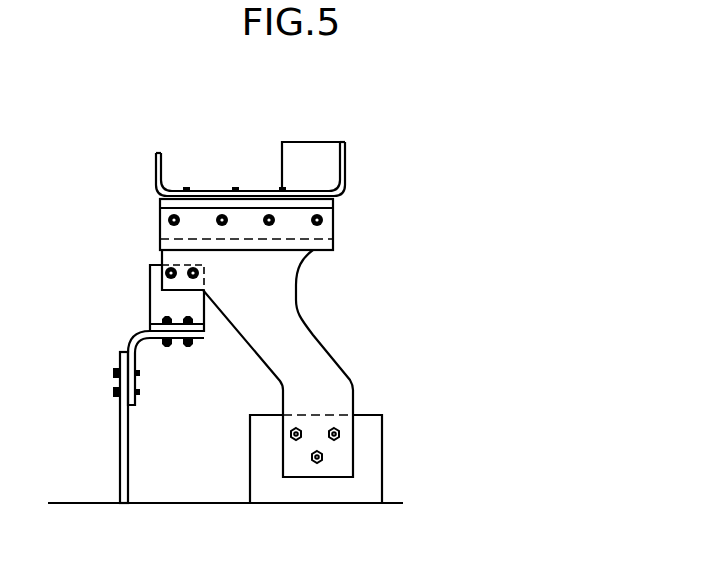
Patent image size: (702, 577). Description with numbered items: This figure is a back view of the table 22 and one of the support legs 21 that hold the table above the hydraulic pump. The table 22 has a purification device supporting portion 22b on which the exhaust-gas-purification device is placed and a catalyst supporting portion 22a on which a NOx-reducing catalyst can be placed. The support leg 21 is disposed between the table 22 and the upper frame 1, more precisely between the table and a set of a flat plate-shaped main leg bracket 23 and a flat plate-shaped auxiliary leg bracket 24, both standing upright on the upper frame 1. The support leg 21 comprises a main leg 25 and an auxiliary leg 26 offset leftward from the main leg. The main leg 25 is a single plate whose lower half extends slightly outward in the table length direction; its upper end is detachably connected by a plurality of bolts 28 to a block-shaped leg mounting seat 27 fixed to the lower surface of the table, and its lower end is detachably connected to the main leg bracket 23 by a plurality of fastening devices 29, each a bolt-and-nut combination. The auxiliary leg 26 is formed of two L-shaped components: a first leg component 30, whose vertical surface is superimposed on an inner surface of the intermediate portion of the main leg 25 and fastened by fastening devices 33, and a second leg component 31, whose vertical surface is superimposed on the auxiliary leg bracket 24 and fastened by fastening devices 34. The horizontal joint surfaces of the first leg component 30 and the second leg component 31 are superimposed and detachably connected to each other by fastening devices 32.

The upper frame 1 is at (158, 503).
The support leg 21 is at (163, 430).
The table 22 is at (348, 164).
The catalyst supporting portion 22a is at (312, 142).
The purification device supporting portion 22b is at (212, 191).
The main leg bracket 23 is at (383, 462).
The auxiliary leg bracket 24 is at (120, 452).
The main leg 25 is at (238, 365).
The auxiliary leg 26 is at (152, 347).
The leg mounting seat 27 is at (308, 241).
The bolts 28 is at (223, 226).
The fastening devices 29 is at (296, 440).
The first leg component 30 is at (150, 276).
The second leg component 31 is at (128, 342).
The fastening devices 32 is at (188, 317).
The fastening devices 33 is at (193, 273).
The fastening devices 34 is at (112, 374).